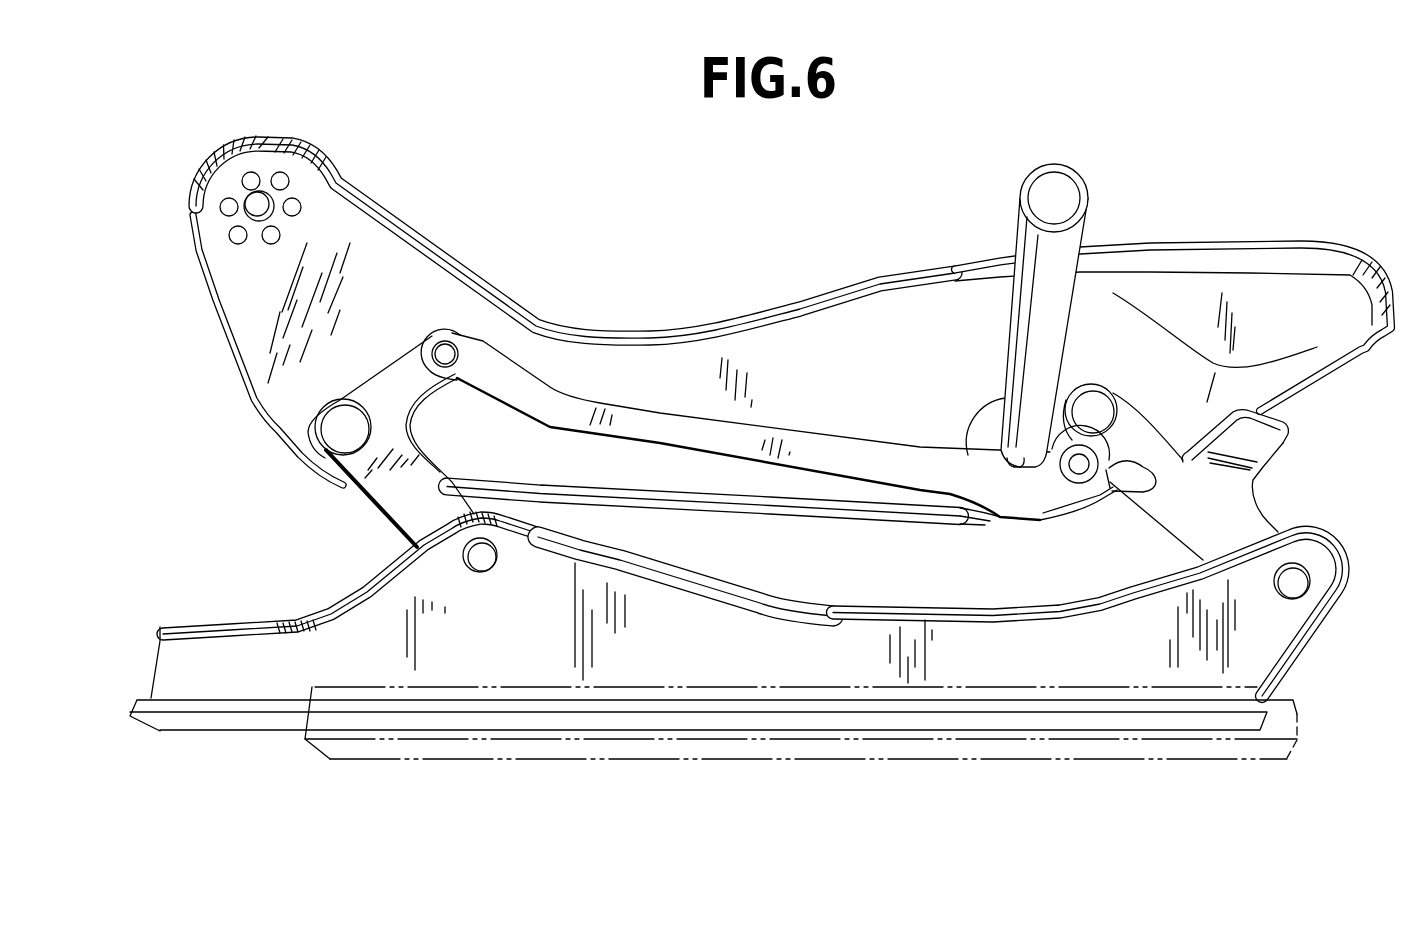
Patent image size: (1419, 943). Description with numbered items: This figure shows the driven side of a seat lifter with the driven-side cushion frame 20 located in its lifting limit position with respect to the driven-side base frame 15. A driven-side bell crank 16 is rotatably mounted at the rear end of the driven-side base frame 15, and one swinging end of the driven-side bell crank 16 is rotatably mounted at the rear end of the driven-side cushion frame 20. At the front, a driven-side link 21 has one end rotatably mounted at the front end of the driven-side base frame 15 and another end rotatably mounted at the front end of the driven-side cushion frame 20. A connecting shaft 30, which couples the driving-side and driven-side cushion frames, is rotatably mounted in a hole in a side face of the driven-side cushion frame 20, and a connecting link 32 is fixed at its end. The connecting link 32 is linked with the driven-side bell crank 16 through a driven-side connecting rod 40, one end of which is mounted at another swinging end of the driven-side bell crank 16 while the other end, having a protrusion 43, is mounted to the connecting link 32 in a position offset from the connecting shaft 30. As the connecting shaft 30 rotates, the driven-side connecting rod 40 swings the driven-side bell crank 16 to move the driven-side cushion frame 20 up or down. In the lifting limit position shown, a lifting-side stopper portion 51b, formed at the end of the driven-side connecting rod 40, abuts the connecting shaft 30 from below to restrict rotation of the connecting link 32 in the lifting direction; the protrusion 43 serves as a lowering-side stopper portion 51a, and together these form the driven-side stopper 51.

The driven-side base frame 15 is at (1267, 637).
The driven-side bell crank 16 is at (397, 507).
The driven-side cushion frame 20 is at (1243, 290).
The driven-side link 21 is at (1227, 502).
The connecting shaft 30 is at (1027, 260).
The connecting link 32 is at (982, 436).
The driven-side connecting rod 40 is at (673, 430).
The protrusion 43 is at (1130, 497).
The driven-side stopper 51 is at (713, 668).
The lowering-side stopper portion 51a is at (1117, 490).
The lifting-side stopper portion 51b is at (1003, 470).